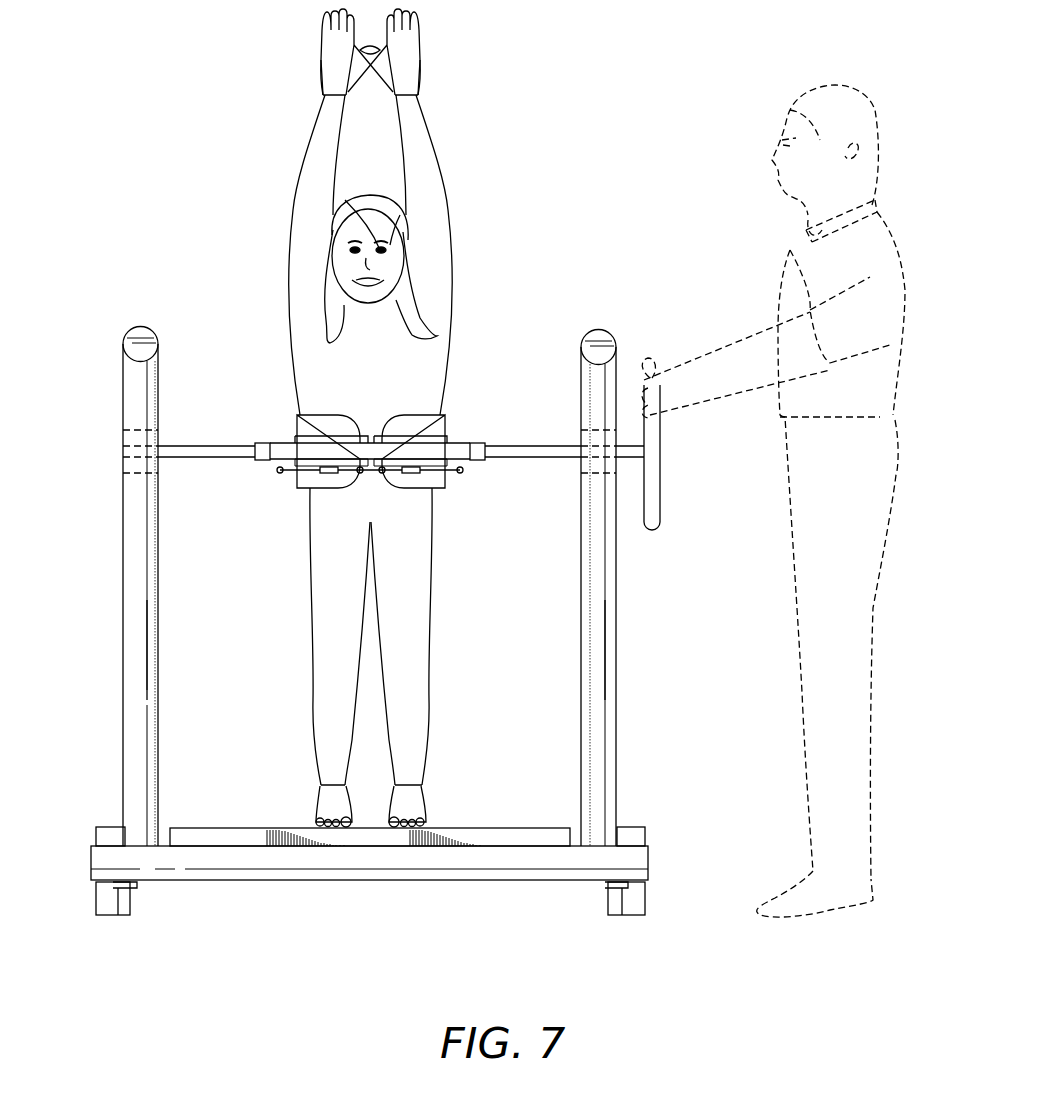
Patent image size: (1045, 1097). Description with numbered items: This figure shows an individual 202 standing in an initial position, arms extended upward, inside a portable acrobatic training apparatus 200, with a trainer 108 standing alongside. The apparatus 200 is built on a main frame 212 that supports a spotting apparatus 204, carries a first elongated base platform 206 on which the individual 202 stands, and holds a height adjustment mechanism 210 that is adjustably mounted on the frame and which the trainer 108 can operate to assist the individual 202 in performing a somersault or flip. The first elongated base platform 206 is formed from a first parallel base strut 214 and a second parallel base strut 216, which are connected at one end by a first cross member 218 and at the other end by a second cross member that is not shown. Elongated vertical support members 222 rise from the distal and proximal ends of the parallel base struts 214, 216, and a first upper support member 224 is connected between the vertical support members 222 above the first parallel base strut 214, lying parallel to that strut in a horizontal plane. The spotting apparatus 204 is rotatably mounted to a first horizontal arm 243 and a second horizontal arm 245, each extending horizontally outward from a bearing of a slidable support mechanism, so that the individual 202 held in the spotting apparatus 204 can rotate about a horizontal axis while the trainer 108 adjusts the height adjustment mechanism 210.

The trainer 108 is at (880, 188).
The portable acrobatic training apparatus 200 is at (110, 586).
The individual 202 is at (470, 178).
The spotting apparatus 204 is at (456, 412).
The first elongated base platform 206 is at (457, 842).
The height adjustment mechanism 210 is at (666, 505).
The main frame 212 is at (118, 386).
The first parallel base strut 214 is at (660, 843).
The second parallel base strut 216 is at (76, 836).
The first cross member 218 is at (357, 858).
The elongated vertical support members 222 is at (143, 690).
The first upper support member 224 is at (146, 338).
The first horizontal arm 243 is at (534, 446).
The second horizontal arm 245 is at (196, 446).